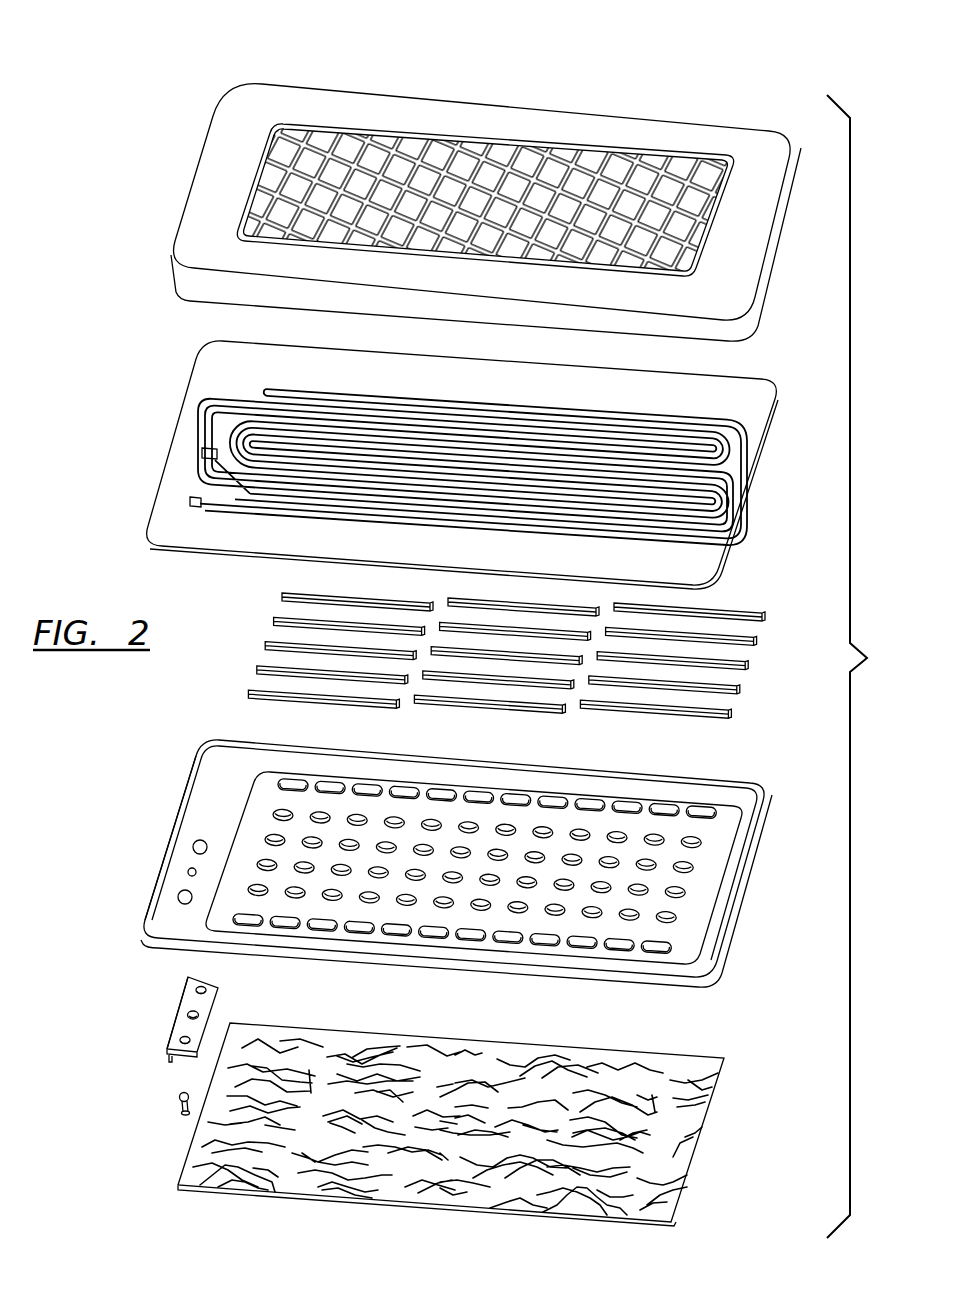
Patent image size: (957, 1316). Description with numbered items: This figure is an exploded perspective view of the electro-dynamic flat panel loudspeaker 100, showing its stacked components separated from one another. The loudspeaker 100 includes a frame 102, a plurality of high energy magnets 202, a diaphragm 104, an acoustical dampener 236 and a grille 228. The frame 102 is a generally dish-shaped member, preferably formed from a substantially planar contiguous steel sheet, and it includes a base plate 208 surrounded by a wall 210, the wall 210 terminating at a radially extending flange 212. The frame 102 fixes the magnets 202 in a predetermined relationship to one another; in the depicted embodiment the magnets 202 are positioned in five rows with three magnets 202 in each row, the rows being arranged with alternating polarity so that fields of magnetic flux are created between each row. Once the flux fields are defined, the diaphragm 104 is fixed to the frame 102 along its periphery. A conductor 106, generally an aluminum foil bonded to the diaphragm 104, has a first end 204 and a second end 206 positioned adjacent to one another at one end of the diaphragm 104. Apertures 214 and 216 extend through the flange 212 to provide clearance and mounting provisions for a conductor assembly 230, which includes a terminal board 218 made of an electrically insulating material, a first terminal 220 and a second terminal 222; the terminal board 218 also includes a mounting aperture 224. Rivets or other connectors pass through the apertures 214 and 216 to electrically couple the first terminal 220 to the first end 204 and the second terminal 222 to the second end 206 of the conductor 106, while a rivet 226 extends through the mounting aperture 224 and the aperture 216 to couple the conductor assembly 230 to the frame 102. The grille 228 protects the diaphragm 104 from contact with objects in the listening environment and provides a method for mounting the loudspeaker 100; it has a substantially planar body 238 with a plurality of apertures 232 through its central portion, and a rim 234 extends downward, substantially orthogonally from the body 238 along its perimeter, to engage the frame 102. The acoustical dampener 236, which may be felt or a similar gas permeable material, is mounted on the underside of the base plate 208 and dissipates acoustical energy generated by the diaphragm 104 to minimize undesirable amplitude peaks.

The electro-dynamic loudspeaker 100 is at (733, 68).
The frame 102 is at (446, 842).
The diaphragm 104 is at (454, 453).
The conductor 106 is at (683, 410).
The high energy magnets 202 is at (246, 630).
The first end 204 is at (190, 498).
The second end 206 is at (204, 448).
The base plate 208 is at (263, 792).
The wall 210 is at (617, 788).
The flange 212 is at (190, 785).
The aperture 214 is at (202, 838).
The aperture 216 is at (188, 867).
The terminal board 218 is at (226, 1034).
The first terminal 220 is at (185, 1044).
The second terminal 222 is at (206, 989).
The mounting aperture 224 is at (195, 1016).
The rivet 226 is at (181, 1104).
The grille 228 is at (499, 176).
The conductor assembly 230 is at (172, 998).
The apertures 232 is at (545, 188).
The rim 234 is at (774, 238).
The acoustical dampener 236 is at (707, 1070).
The planar body 238 is at (466, 96).